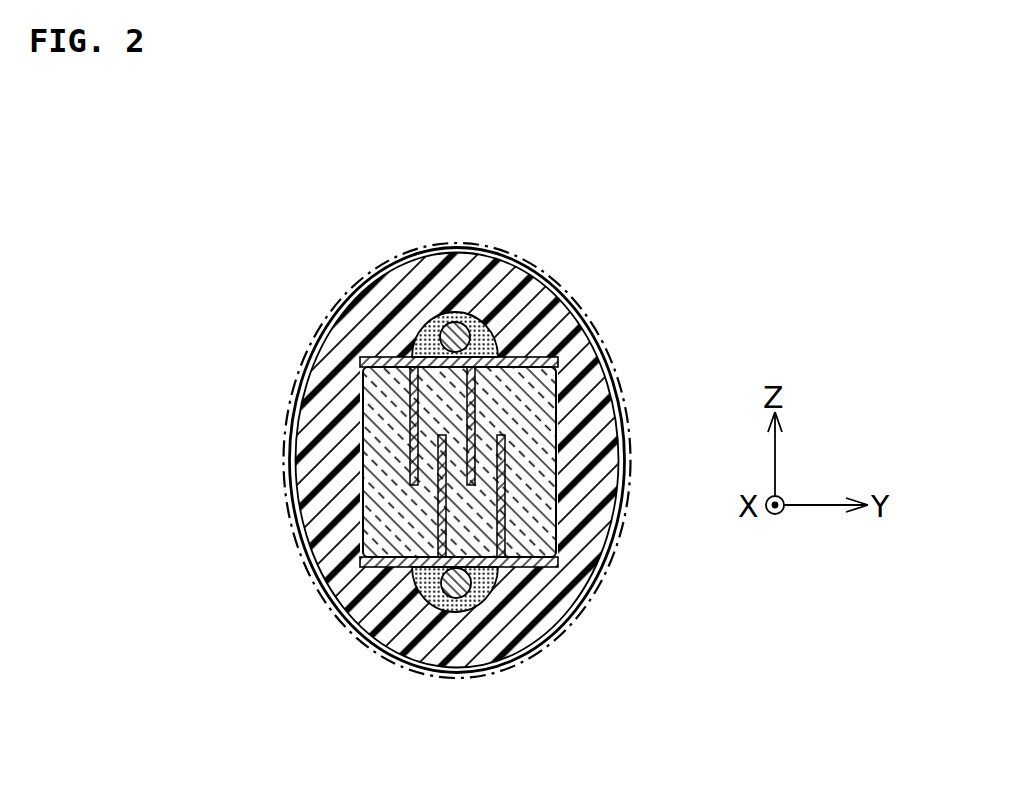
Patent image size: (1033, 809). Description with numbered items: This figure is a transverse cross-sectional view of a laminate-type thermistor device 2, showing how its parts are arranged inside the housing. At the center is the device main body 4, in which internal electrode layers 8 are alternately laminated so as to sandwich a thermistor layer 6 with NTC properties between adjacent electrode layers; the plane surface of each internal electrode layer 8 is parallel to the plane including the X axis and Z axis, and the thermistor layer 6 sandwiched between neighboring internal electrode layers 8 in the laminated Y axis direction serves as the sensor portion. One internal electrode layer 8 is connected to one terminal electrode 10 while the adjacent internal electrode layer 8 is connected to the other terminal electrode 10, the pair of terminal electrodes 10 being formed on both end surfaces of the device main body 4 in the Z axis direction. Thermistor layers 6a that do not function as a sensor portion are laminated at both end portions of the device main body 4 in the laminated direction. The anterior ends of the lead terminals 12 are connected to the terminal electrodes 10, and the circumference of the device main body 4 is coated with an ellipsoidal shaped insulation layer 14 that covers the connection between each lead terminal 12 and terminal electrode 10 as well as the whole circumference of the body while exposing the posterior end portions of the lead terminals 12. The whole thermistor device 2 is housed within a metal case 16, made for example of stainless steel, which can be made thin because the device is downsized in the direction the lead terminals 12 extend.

The laminate-type thermistor device 2 is at (598, 302).
The device main body 4 is at (383, 492).
The thermistor layer 6 is at (410, 450).
The thermistor layer not functioning as a sensor portion 6a is at (412, 415).
The internal electrode layer 8 is at (362, 363).
The terminal electrode 10 is at (470, 380).
The lead terminal 12 is at (447, 317).
The insulation layer 14 is at (587, 560).
The metal case 16 is at (318, 628).